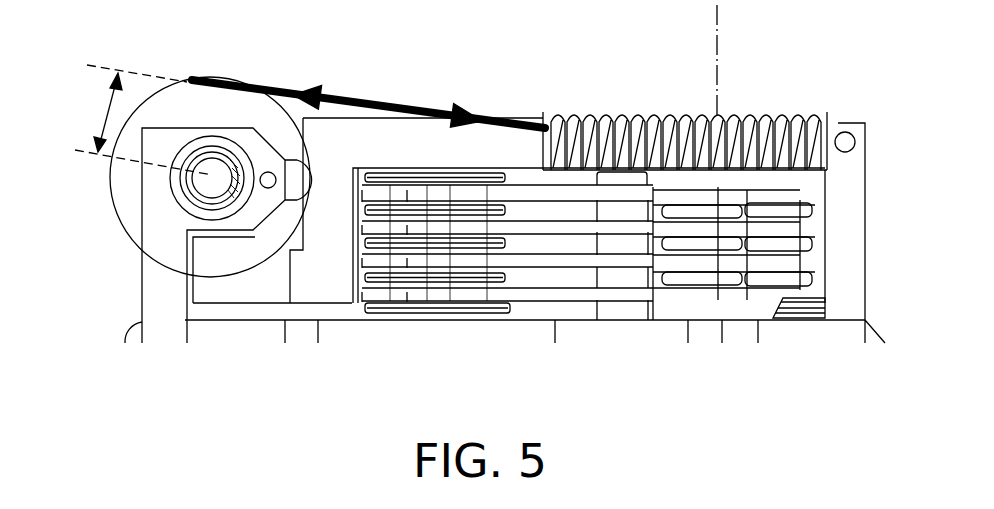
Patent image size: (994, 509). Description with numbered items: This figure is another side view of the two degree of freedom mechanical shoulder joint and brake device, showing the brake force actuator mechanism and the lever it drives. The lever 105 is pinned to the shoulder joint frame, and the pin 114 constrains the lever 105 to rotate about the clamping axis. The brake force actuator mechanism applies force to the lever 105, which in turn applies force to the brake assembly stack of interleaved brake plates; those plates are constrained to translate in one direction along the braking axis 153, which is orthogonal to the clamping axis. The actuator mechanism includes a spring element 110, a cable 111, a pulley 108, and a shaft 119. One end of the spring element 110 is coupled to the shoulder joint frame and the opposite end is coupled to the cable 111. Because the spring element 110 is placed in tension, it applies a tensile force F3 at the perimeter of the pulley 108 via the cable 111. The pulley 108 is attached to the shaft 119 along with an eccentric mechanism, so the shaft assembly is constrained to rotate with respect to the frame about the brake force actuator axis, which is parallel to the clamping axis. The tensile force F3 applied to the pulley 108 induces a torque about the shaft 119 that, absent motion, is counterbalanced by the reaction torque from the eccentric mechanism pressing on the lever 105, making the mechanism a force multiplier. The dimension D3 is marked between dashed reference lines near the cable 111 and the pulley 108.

The lever 105 is at (533, 118).
The pulley 108 is at (130, 225).
The spring element 110 is at (793, 115).
The cable 111 is at (280, 88).
The pin 114 is at (852, 134).
The shaft 119 is at (200, 183).
The braking axis 153 is at (715, 32).
The distance D3 is at (142, 120).
The tensile force F3 is at (407, 107).